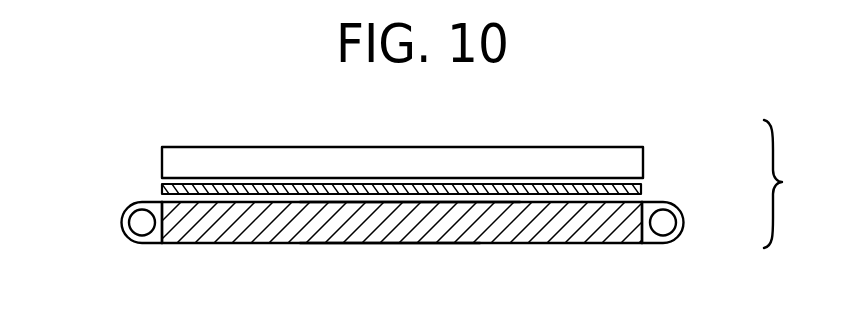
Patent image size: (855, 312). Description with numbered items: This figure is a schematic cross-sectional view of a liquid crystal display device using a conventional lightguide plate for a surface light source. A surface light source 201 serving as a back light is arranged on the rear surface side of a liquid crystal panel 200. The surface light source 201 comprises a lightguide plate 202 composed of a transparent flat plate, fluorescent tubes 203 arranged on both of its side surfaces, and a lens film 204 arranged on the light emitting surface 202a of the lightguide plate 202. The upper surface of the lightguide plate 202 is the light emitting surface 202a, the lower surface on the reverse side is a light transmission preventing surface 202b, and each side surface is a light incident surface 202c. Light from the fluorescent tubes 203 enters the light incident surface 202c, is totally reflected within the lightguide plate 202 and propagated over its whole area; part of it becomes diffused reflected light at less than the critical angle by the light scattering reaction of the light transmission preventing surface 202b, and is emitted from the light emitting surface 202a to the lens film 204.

The liquid crystal panel 200 is at (216, 160).
The surface light source 201 is at (804, 184).
The lightguide plate 202 is at (582, 228).
The light emitting surface 202a is at (522, 200).
The light transmission preventing surface 202b is at (377, 244).
The light incident surface 202c is at (159, 240).
The fluorescent tube 203 is at (121, 222).
The lens film 204 is at (642, 198).